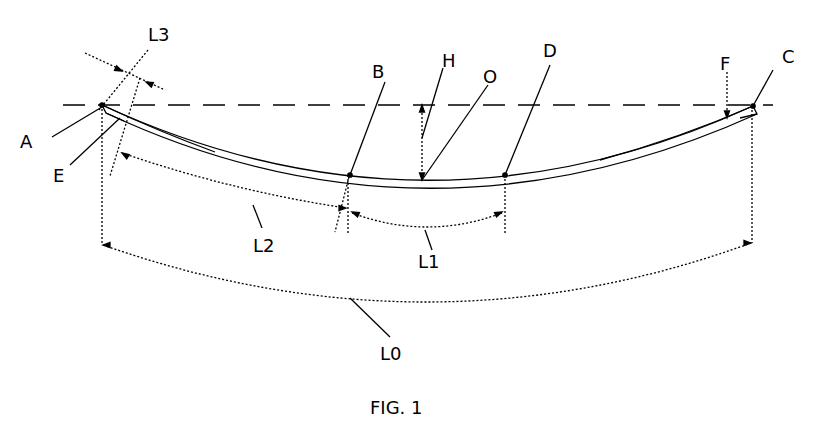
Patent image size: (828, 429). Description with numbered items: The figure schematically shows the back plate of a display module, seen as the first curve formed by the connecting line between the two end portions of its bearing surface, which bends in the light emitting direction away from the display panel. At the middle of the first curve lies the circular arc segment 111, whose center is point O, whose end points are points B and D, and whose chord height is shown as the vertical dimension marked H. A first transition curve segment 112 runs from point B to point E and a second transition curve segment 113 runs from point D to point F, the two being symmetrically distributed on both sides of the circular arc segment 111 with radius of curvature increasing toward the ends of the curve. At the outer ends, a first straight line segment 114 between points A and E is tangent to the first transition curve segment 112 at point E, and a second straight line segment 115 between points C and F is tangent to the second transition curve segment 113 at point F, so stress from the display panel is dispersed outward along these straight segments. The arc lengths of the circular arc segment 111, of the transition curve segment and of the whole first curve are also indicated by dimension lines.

The circular arc segment 111 is at (395, 177).
The first transition curve segment 112 is at (195, 147).
The second transition curve segment 113 is at (625, 150).
The first straight line segment 114 is at (124, 116).
The second straight line segment 115 is at (755, 118).